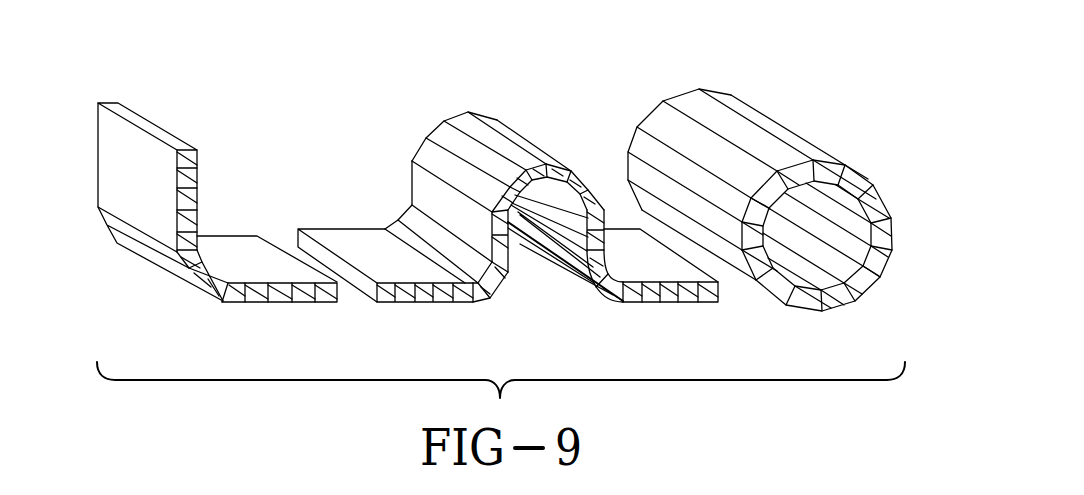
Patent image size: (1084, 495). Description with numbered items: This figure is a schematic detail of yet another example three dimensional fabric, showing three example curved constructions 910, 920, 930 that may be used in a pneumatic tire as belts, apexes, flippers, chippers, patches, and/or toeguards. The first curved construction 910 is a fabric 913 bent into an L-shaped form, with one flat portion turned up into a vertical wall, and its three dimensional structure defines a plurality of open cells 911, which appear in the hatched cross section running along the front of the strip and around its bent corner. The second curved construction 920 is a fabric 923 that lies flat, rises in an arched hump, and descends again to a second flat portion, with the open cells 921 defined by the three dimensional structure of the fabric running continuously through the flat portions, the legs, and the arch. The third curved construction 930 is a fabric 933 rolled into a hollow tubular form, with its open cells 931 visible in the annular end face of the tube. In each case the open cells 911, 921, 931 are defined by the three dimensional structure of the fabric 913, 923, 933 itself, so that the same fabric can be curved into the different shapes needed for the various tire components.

The curved construction 910 is at (254, 92).
The open cells 911 is at (201, 273).
The fabric 913 is at (120, 166).
The curved construction 920 is at (415, 87).
The open cells 921 is at (653, 284).
The fabric 923 is at (368, 247).
The curved construction 930 is at (625, 80).
The open cells 931 is at (866, 277).
The fabric 933 is at (733, 128).